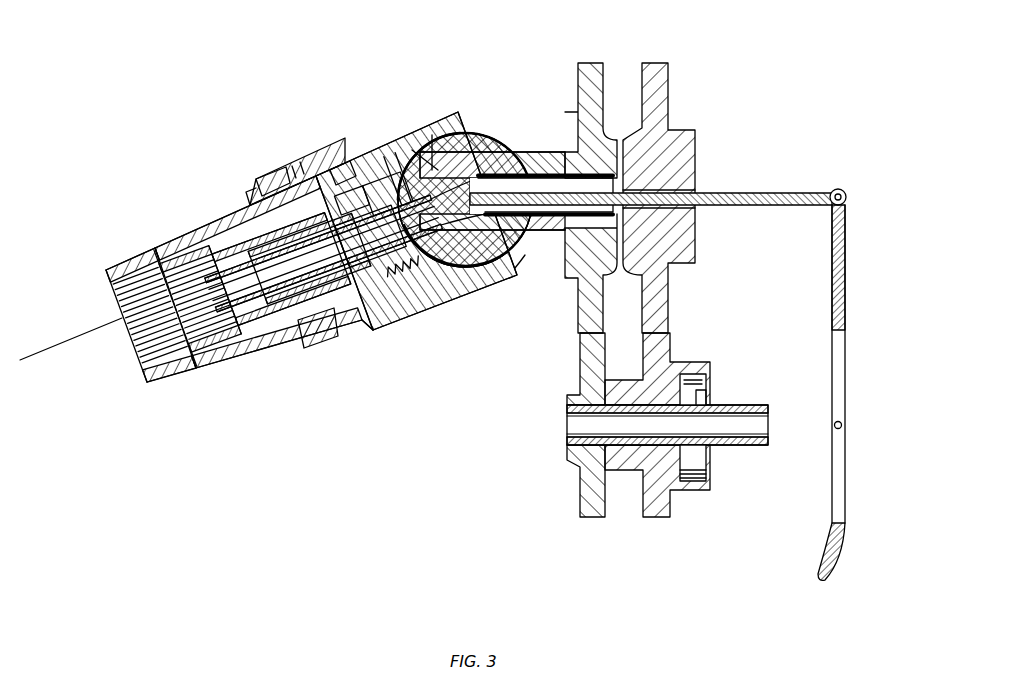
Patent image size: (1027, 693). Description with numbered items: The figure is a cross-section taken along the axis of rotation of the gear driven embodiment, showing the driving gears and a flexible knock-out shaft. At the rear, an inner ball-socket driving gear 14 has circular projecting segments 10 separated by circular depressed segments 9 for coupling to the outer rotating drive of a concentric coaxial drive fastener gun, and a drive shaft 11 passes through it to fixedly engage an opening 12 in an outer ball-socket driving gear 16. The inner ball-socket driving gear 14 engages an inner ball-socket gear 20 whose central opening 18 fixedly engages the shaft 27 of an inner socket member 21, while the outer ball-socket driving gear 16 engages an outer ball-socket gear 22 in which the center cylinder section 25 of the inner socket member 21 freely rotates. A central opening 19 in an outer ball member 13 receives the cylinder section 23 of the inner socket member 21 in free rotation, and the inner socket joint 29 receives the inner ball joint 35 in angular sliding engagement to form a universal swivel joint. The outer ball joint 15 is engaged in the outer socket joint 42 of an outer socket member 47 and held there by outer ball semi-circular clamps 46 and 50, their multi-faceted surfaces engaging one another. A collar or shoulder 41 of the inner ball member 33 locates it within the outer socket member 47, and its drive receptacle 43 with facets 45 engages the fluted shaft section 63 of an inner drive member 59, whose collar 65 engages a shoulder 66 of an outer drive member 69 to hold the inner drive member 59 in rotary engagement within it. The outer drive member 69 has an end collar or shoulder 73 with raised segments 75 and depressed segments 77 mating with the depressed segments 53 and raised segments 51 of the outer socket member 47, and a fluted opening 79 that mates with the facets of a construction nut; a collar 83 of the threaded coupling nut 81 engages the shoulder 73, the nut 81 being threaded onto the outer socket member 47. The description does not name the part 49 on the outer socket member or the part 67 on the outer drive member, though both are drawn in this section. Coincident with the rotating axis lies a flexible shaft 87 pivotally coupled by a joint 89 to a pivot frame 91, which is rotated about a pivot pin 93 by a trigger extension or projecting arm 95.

The circular depressed segments 9 is at (712, 388).
The circular projecting segments 10 is at (706, 364).
The drive shaft 11 is at (755, 405).
The opening 12 is at (572, 455).
The outer ball member 13 is at (526, 152).
The inner ball-socket driving gear 14 is at (654, 517).
The outer ball joint 15 is at (492, 152).
The outer ball-socket driving gear 16 is at (590, 517).
The central opening 18 is at (665, 228).
The central opening 19 is at (395, 168).
The inner ball-socket gear 20 is at (660, 63).
The inner socket member 21 is at (520, 158).
The outer ball-socket gear 22 is at (600, 63).
The cylinder section 23 is at (470, 258).
The center cylinder section 25 is at (582, 172).
The shaft 27 is at (677, 175).
The inner socket joint 29 is at (468, 140).
The inner ball member 33 is at (396, 130).
The inner ball joint 35 is at (418, 150).
The collar or shoulder 41 is at (372, 128).
The outer socket joint 42 is at (430, 130).
The drive receptacle 43 is at (352, 158).
The facets 45 is at (392, 305).
The outer ball semi-circular clamp 46 is at (448, 115).
The outer socket member 47 is at (462, 280).
The collar shoulder 49 is at (441, 292).
The outer ball semi-circular clamp 50 is at (508, 270).
The raised segments 51 is at (356, 305).
The depressed segments 53 is at (336, 172).
The inner drive member 59 is at (203, 238).
The fluted shaft section 63 is at (340, 340).
The collar 65 is at (216, 345).
The shoulder 66 is at (176, 372).
The threaded insert 67 is at (176, 258).
The outer drive member 69 is at (121, 265).
The end collar or shoulder 73 is at (262, 182).
The raised segments 75 is at (270, 170).
The depressed segments 77 is at (322, 335).
The multi-faceted or fluted opening 79 is at (71, 340).
The threaded cylindrical coupling collar or nut 81 is at (284, 152).
The collar 83 is at (250, 195).
The flexible shaft 87 is at (768, 193).
The joint 89 is at (847, 197).
The pivot frame 91 is at (845, 262).
The pivot pin 93 is at (842, 425).
The trigger extension or projecting arm 95 is at (838, 560).